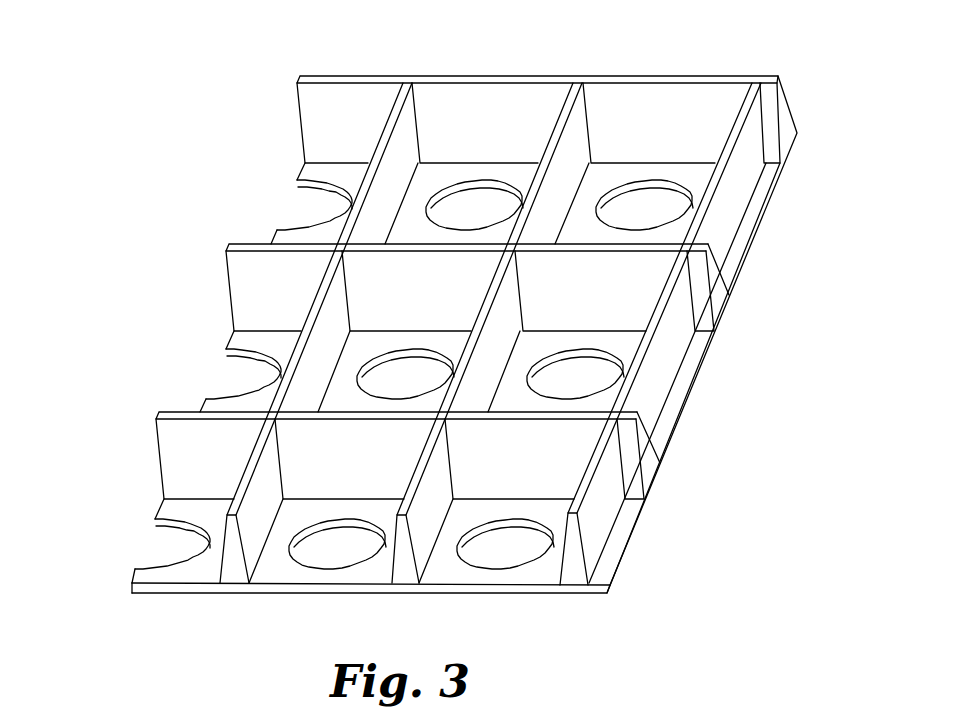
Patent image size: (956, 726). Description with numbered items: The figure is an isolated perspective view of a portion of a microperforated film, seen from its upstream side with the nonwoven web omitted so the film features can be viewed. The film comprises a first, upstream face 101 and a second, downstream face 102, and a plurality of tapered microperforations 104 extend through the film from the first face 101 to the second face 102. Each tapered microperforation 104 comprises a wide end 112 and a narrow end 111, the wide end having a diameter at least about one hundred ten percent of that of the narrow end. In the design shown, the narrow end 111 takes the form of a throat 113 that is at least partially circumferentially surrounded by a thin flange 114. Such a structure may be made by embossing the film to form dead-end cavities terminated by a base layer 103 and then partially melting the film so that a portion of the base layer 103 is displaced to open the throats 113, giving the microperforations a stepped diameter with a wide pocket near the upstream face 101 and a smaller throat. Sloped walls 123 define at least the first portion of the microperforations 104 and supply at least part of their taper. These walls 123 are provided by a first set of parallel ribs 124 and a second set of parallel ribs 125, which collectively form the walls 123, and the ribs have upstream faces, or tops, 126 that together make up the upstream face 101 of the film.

The first, upstream face 101 is at (658, 248).
The second, downstream face 102 is at (174, 578).
The base layer 103 is at (627, 552).
The tapered microperforation 104 is at (323, 480).
The narrow end 111 is at (588, 372).
The wide end 112 is at (482, 82).
The throat 113 is at (510, 554).
The flange 114 is at (440, 570).
The walls 123 is at (312, 303).
The first set of parallel ribs 124 is at (382, 127).
The second set of parallel ribs 125 is at (334, 80).
The upstream faces (tops) 126 is at (561, 106).